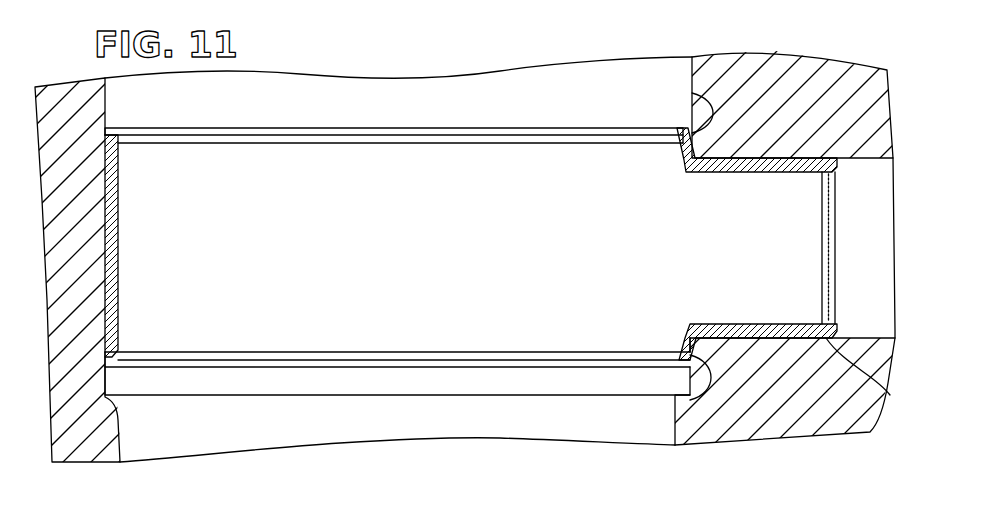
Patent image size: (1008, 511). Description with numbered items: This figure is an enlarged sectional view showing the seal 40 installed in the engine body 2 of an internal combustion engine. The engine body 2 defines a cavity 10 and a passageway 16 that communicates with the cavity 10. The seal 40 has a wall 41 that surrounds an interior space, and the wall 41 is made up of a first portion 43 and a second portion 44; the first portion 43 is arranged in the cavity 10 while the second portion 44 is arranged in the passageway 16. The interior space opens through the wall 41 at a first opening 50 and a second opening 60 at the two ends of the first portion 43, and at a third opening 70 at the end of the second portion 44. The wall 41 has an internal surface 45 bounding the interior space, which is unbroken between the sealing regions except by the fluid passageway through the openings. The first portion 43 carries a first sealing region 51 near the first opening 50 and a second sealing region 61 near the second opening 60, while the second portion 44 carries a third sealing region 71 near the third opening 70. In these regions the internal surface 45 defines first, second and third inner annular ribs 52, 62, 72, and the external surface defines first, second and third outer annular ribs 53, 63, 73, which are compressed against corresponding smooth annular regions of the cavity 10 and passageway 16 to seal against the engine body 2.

The engine body 2 is at (828, 62).
The cavity 10 is at (582, 62).
The passageway 16 is at (875, 201).
The seal 40 is at (480, 259).
The wall 41 is at (690, 173).
The first portion 43 is at (371, 279).
The second portion 44 is at (726, 251).
The internal surface 45 is at (296, 179).
The first opening 50 is at (394, 143).
The first sealing region 51 is at (188, 155).
The first inner annular rib 52 is at (490, 143).
The first outer annular rib 53 is at (692, 101).
The second opening 60 is at (397, 355).
The second sealing region 61 is at (512, 341).
The second inner annular rib 62 is at (275, 351).
The second outer annular rib 63 is at (690, 401).
The third opening 70 is at (825, 248).
The third sealing region 71 is at (812, 244).
The third inner annular rib 72 is at (822, 295).
The third outer annular rib 73 is at (890, 395).